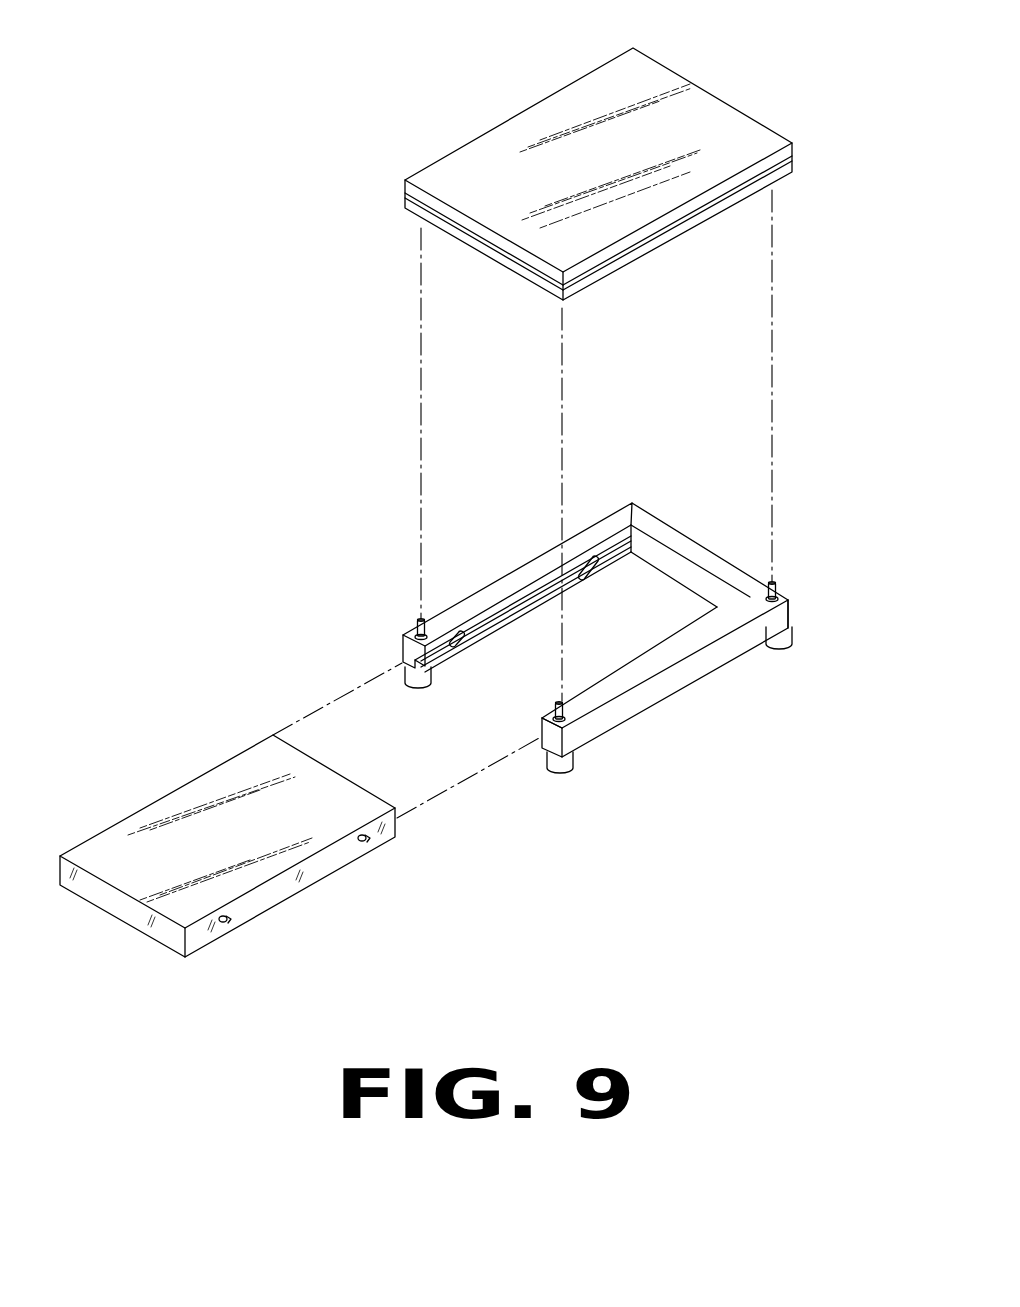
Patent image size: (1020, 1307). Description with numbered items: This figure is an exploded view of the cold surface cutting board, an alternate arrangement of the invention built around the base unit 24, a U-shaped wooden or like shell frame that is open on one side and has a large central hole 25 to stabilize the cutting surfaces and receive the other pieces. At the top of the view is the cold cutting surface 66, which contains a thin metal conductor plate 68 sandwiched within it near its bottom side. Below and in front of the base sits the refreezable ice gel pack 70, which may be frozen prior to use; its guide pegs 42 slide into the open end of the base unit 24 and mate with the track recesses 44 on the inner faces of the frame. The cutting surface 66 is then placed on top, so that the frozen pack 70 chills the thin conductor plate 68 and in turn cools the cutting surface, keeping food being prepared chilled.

The base unit 24 is at (723, 558).
The large central hole 25 is at (638, 638).
The guide pegs 42 is at (231, 919).
The track recesses 44 is at (520, 603).
The cold cutting surface 66 is at (547, 172).
The thin metal conductor plate 68 is at (792, 158).
The refreezable ice gel pack 70 is at (330, 817).